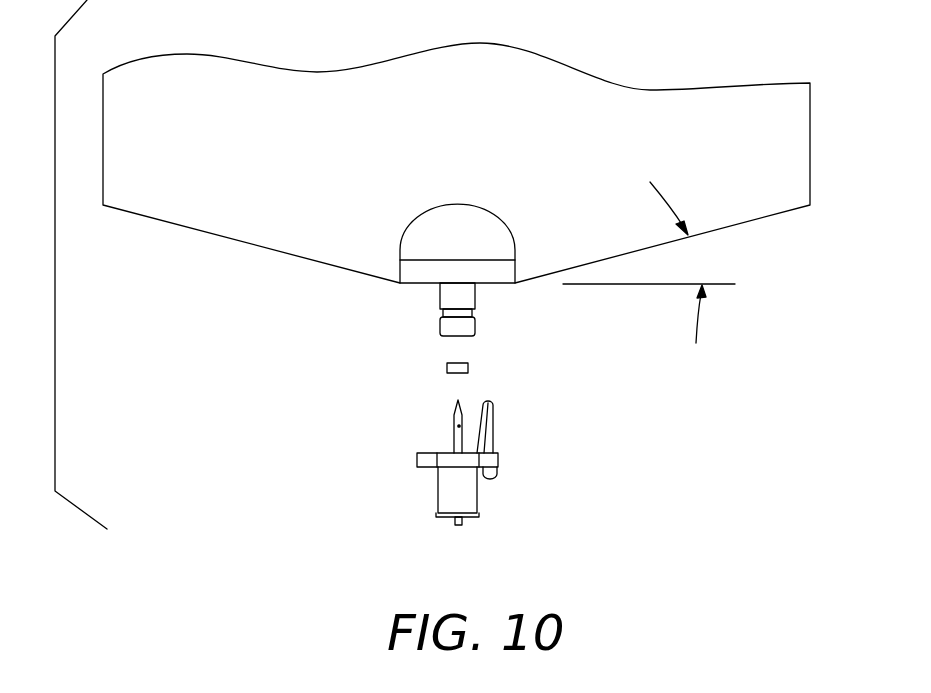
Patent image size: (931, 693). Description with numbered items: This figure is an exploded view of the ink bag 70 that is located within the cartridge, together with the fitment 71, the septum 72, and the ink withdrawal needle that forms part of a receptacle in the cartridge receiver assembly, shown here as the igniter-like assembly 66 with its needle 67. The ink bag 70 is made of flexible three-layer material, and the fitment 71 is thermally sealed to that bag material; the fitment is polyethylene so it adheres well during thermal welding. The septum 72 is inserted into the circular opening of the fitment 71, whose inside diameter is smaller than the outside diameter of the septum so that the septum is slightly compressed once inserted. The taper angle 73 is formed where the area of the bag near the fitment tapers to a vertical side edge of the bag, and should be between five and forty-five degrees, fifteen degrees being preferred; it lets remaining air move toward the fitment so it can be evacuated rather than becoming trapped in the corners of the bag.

The ink bag 70 is at (453, 154).
The fitment 71 is at (445, 300).
The septum 72 is at (468, 370).
The taper angle 73 is at (692, 262).
The igniter assembly 66 is at (417, 458).
The electrode 67 is at (490, 423).